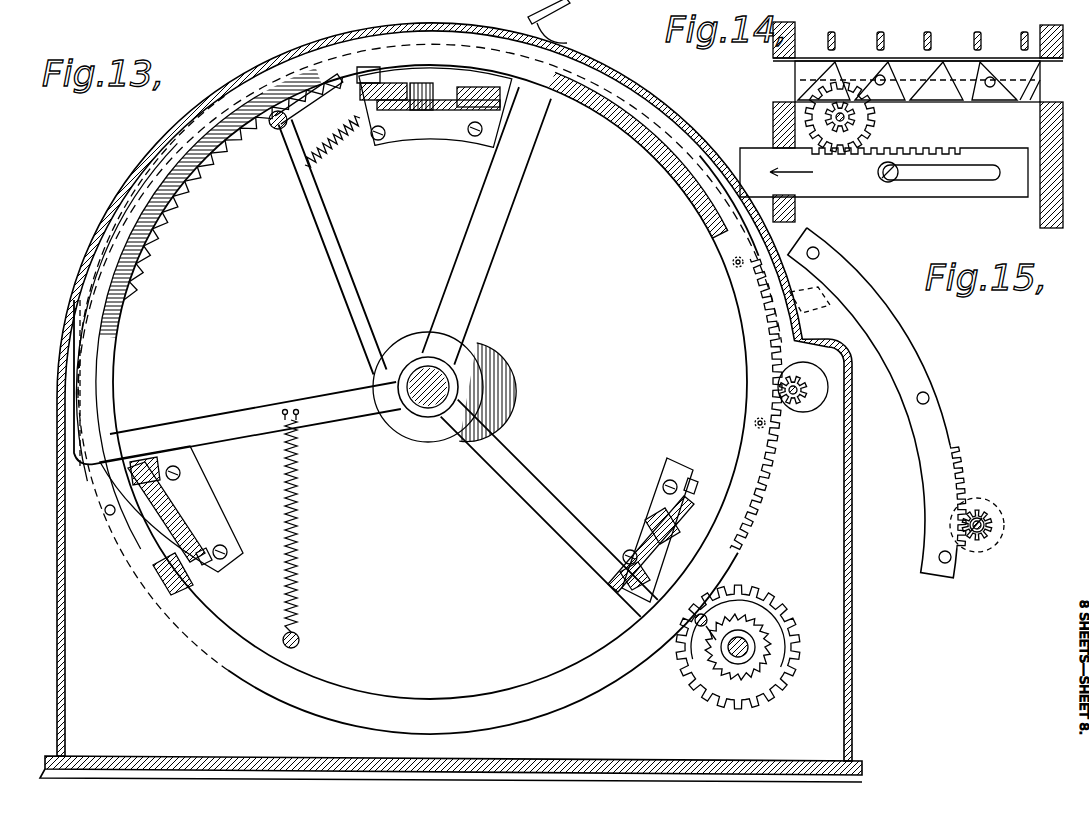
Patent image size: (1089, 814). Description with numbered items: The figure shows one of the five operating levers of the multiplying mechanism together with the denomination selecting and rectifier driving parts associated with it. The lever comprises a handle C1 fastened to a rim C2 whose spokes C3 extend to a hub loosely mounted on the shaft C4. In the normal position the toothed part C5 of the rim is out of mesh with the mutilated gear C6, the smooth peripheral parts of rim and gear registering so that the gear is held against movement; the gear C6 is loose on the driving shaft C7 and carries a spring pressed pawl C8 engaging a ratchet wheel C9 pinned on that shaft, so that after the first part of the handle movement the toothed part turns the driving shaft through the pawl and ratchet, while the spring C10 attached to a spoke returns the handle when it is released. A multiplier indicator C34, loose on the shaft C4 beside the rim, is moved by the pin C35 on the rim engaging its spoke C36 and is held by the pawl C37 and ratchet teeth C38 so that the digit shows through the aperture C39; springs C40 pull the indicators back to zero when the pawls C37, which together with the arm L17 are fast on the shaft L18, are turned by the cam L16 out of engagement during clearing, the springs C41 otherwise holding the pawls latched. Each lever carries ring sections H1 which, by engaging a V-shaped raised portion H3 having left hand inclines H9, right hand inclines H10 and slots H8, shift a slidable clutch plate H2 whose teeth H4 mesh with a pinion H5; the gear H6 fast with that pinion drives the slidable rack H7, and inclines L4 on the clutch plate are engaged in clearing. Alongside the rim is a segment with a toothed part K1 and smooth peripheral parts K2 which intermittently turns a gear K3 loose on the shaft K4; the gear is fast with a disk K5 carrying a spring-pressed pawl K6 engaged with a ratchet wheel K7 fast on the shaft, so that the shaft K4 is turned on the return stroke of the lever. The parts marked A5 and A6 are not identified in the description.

In FIG. 13, the handle C1 is at (568, 28).
In FIG. 13, the rim C2 is at (710, 212).
In FIG. 13, the spokes C3 is at (478, 262).
In FIG. 13, the shaft C4 is at (428, 390).
In FIG. 13, the toothed part C5 is at (778, 461).
In FIG. 13, the mutilated gear C6 is at (773, 610).
In FIG. 13, the driving shaft C7 is at (745, 642).
In FIG. 13, the spring pressed pawl C8 is at (693, 637).
In FIG. 13, the ratchet wheel C9 is at (752, 672).
In FIG. 13, the spring C10 is at (287, 433).
In FIG. 13, the multiplier indicator C34 is at (640, 113).
In FIG. 13, the pin C35 is at (106, 512).
In FIG. 13, the spoke C36 is at (265, 412).
In FIG. 13, the pawl C37 is at (300, 108).
In FIG. 13, the ratchet teeth C38 is at (203, 142).
In FIG. 13, the apertures C39 is at (688, 130).
In FIG. 13, the springs C40 is at (300, 442).
In FIG. 13, the springs C41 is at (318, 160).
In FIG. 13, the ring sections H1 is at (252, 127).
In FIG. 14, the ring sections H1 is at (881, 35).
In FIG. 13, the clutch plate H2 is at (365, 88).
In FIG. 14, the clutch plate H2 is at (803, 65).
In FIG. 13, the V-shaped raised portion H3 is at (398, 76).
In FIG. 14, the V-shaped raised portion H3 is at (938, 72).
In FIG. 14, the teeth H4 is at (815, 102).
In FIG. 13, the pinion H5 is at (432, 108).
In FIG. 14, the pinion H5 is at (858, 117).
In FIG. 13, the gear H6 is at (415, 110).
In FIG. 14, the gear H6 is at (872, 134).
In FIG. 13, the rack H7 is at (500, 98).
In FIG. 14, the rack H7 is at (858, 188).
In FIG. 14, the slots H8 is at (905, 105).
In FIG. 14, the left hand inclines H9 is at (883, 58).
In FIG. 14, the right hand inclines H10 is at (975, 62).
In FIG. 15, the toothed part K1 is at (960, 477).
In FIG. 15, the smooth peripheral parts K2 is at (942, 413).
In FIG. 13, the intermittent gears K3 is at (810, 392).
In FIG. 15, the intermittent gears K3 is at (990, 510).
In FIG. 13, the shaft K4 is at (796, 382).
In FIG. 15, the shaft K4 is at (977, 538).
In FIG. 13, the disk K5 is at (797, 378).
In FIG. 15, the disk K5 is at (984, 503).
In FIG. 15, the spring-pressed pawl K6 is at (1002, 532).
In FIG. 15, the ratchet wheel K7 is at (988, 538).
In FIG. 14, the inclines L4 is at (1060, 90).
In FIG. 13, the cam L16 is at (410, 320).
In FIG. 13, the arm L17 is at (338, 257).
In FIG. 13, the shaft L18 is at (277, 130).
In FIG. 14, the post A5 is at (1043, 208).
In FIG. 13, the base plate A6 is at (172, 755).